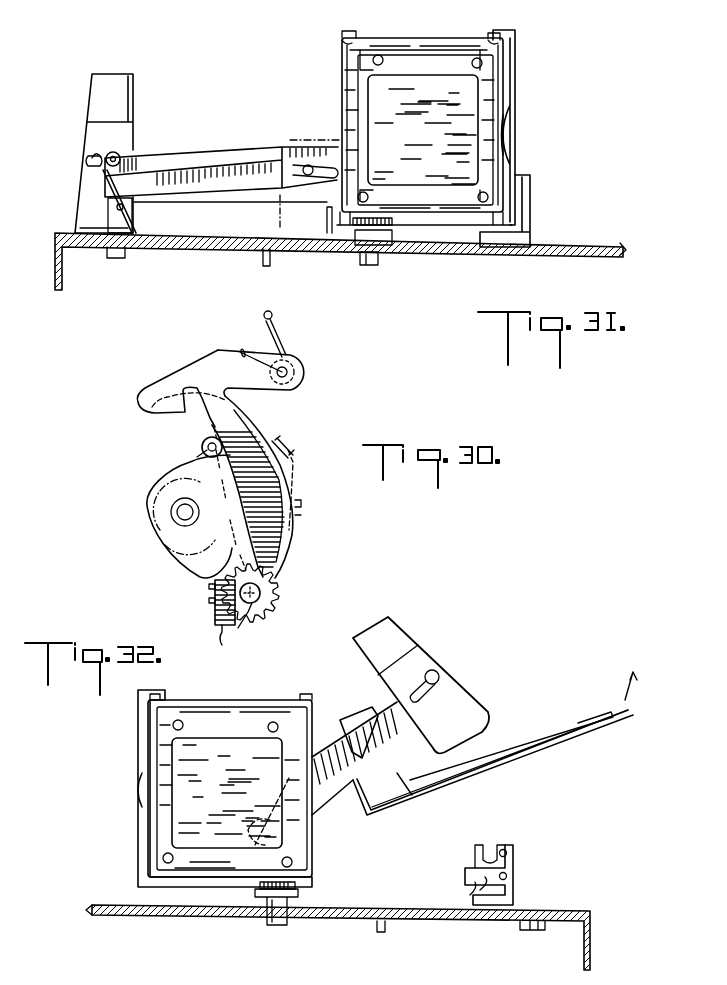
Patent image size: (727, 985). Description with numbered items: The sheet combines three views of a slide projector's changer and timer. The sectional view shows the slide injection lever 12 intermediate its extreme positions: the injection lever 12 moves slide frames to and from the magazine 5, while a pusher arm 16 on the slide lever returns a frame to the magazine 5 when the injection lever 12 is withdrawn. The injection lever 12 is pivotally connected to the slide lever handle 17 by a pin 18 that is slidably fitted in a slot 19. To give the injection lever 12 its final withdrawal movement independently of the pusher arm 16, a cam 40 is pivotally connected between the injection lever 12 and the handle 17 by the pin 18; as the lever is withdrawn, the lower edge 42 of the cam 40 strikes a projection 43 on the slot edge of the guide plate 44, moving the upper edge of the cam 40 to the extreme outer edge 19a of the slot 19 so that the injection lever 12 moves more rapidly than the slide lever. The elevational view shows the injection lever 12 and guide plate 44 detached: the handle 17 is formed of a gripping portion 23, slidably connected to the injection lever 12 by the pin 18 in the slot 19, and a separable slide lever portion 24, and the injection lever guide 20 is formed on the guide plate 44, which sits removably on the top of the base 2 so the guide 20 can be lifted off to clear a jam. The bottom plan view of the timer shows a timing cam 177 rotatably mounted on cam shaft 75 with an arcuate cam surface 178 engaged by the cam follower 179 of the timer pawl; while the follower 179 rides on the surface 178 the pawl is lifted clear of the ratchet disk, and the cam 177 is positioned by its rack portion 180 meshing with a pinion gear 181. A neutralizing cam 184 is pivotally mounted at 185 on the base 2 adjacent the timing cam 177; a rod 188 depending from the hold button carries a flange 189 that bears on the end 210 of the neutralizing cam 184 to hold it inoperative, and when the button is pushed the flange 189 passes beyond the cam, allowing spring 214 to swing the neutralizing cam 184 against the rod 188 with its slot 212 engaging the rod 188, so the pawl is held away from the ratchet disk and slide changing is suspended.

In FIG. 32, the base 2 is at (422, 910).
In FIG. 31, the magazine 5 is at (412, 45).
In FIG. 32, the magazine 5 is at (283, 710).
In FIG. 31, the slide injection lever 12 is at (230, 153).
In FIG. 32, the slide injection lever 12 is at (327, 790).
In FIG. 31, the pusher arm 16 is at (525, 177).
In FIG. 31, the slide lever handle 17 is at (127, 93).
In FIG. 32, the slide lever handle 17 is at (433, 647).
In FIG. 31, the pin 18 is at (118, 157).
In FIG. 31, the slot 19 is at (97, 157).
In FIG. 31, the extreme outer edge of slot 19a is at (88, 163).
In FIG. 32, the injection lever guide 20 is at (407, 775).
In FIG. 32, the gripping portion 23 is at (467, 698).
In FIG. 32, the slide lever portion 24 is at (497, 867).
In FIG. 31, the cam 40 is at (132, 208).
In FIG. 31, the lower edge of cam 42 is at (132, 220).
In FIG. 31, the projection 43 is at (118, 230).
In FIG. 32, the projection 43 is at (582, 727).
In FIG. 31, the guide plate 44 is at (250, 204).
In FIG. 32, the guide plate 44 is at (527, 748).
In FIG. 30, the cam shaft 75 is at (171, 512).
In FIG. 30, the timing cam 177 is at (200, 562).
In FIG. 30, the arcuate cam surface 178 is at (272, 442).
In FIG. 30, the cam follower 179 is at (292, 460).
In FIG. 30, the rack portion 180 is at (250, 547).
In FIG. 30, the pinion gear 181 is at (276, 617).
In FIG. 30, the neutralizing cam 184 is at (253, 432).
In FIG. 30, the pivot 185 is at (290, 370).
In FIG. 30, the rod 188 is at (262, 593).
In FIG. 30, the flange 189 is at (250, 602).
In FIG. 30, the end of neutralizing cam 210 is at (222, 645).
In FIG. 30, the slot 212 is at (217, 593).
In FIG. 30, the spring 214 is at (278, 333).